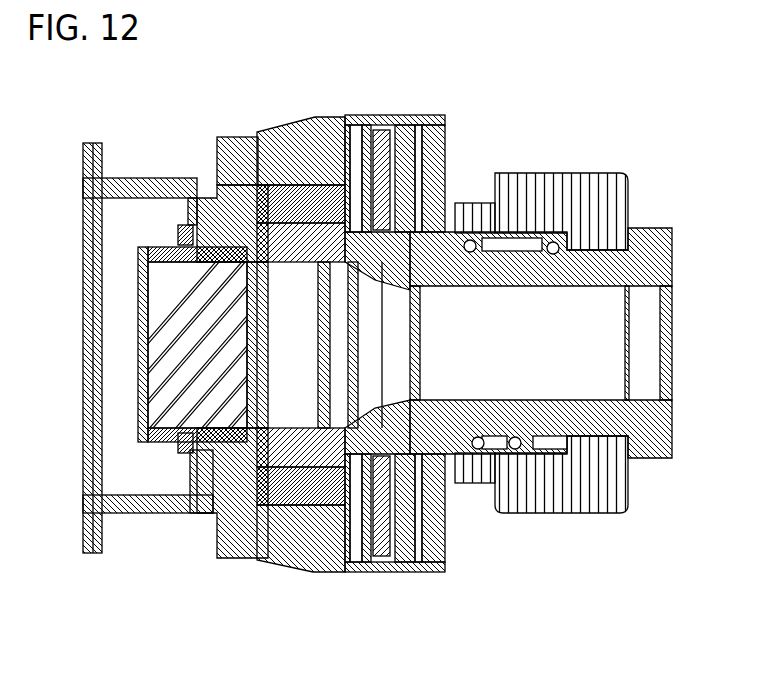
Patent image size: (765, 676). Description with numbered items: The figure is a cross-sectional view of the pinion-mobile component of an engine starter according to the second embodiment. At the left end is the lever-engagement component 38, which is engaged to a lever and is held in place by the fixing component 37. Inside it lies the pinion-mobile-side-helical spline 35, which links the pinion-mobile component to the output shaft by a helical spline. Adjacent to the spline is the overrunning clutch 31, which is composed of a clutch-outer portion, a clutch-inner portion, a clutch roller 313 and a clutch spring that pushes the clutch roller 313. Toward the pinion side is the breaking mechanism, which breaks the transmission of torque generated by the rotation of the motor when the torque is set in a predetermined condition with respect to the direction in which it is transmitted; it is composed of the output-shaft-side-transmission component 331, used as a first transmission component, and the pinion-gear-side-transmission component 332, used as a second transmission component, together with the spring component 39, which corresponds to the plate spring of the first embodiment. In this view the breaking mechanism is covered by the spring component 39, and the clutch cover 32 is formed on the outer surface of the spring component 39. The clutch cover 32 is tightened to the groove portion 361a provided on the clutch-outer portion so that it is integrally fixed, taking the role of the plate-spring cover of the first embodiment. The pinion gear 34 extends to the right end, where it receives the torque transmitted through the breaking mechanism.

The overrunning clutch 31 is at (252, 553).
The clutch roller 313 is at (240, 137).
The clutch cover 32 is at (447, 160).
The output-shaft-side-transmission component 331 is at (400, 573).
The pinion-gear-side-transmission component 332 is at (453, 530).
The pinion gear 34 is at (547, 197).
The pinion-mobile-side-helical spline 35 is at (170, 367).
The groove portion 361a is at (310, 123).
The fixing component 37 is at (178, 224).
The lever-engagement component 38 is at (127, 178).
The spring component 39 is at (377, 120).